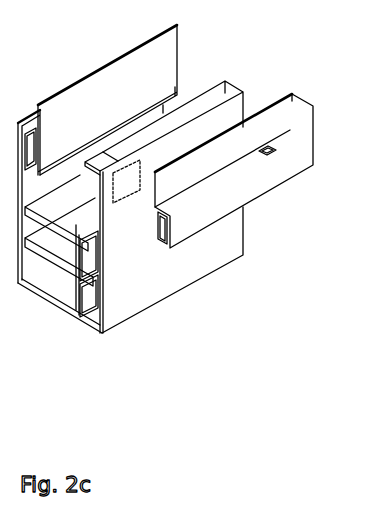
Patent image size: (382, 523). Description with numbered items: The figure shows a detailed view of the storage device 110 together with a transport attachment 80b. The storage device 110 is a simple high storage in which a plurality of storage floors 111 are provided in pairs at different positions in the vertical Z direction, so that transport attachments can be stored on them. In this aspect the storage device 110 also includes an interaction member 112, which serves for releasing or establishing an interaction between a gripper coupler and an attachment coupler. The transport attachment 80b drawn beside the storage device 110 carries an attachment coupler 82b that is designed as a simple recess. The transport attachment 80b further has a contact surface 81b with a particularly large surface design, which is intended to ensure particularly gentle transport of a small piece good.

The storage device 110 is at (143, 268).
The storage floors 111 is at (40, 238).
The interaction member 112 is at (127, 183).
The transport attachment 80b is at (245, 182).
The contact surface 81b is at (193, 163).
The attachment coupler 82b is at (266, 153).